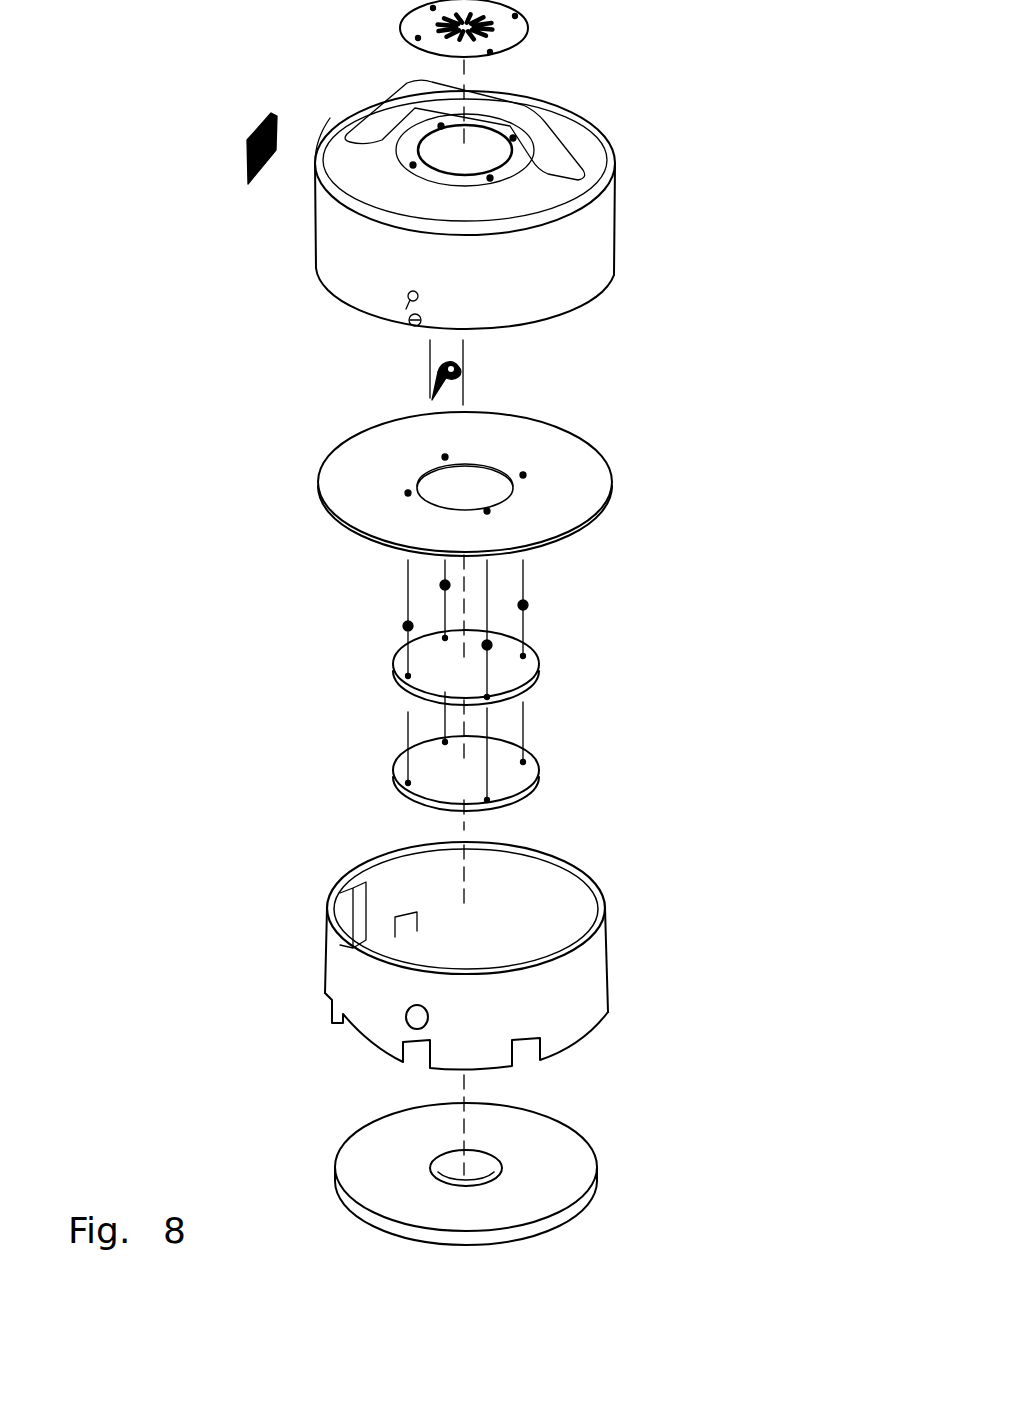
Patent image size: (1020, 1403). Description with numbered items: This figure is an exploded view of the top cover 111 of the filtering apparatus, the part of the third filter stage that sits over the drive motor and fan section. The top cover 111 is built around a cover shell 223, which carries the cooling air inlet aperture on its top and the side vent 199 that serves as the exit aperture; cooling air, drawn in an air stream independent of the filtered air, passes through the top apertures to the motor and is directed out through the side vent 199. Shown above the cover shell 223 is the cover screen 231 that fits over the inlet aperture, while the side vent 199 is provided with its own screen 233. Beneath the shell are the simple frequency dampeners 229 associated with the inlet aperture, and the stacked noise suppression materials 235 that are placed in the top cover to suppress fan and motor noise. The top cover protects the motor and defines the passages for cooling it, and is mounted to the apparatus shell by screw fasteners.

The top cover 111 is at (716, 782).
The cover screen 231 is at (530, 28).
The screen 233 is at (247, 162).
The side vent 199 is at (305, 167).
The cover shell 223 is at (600, 228).
The noise suppression materials 235 is at (612, 482).
The frequency dampeners 229 is at (540, 668).